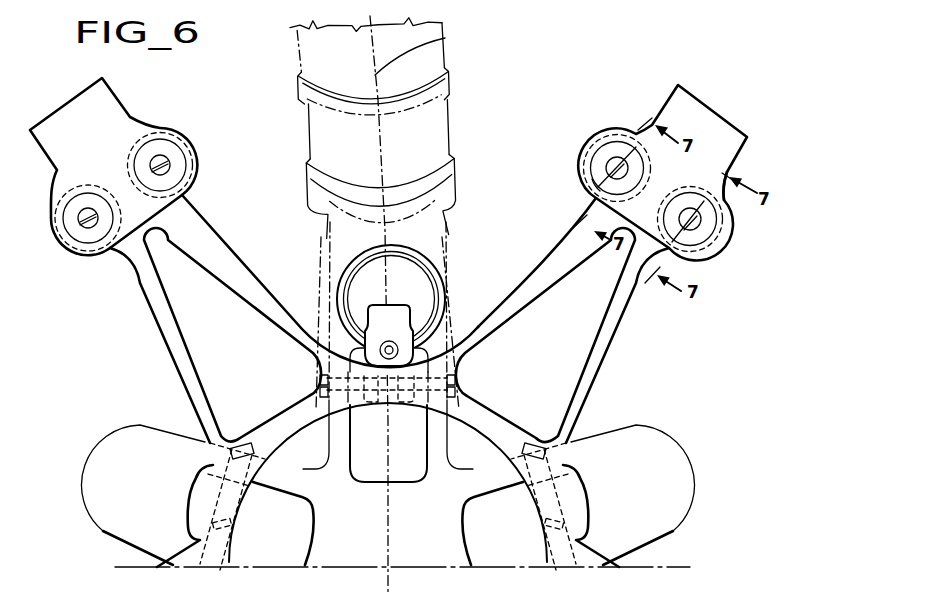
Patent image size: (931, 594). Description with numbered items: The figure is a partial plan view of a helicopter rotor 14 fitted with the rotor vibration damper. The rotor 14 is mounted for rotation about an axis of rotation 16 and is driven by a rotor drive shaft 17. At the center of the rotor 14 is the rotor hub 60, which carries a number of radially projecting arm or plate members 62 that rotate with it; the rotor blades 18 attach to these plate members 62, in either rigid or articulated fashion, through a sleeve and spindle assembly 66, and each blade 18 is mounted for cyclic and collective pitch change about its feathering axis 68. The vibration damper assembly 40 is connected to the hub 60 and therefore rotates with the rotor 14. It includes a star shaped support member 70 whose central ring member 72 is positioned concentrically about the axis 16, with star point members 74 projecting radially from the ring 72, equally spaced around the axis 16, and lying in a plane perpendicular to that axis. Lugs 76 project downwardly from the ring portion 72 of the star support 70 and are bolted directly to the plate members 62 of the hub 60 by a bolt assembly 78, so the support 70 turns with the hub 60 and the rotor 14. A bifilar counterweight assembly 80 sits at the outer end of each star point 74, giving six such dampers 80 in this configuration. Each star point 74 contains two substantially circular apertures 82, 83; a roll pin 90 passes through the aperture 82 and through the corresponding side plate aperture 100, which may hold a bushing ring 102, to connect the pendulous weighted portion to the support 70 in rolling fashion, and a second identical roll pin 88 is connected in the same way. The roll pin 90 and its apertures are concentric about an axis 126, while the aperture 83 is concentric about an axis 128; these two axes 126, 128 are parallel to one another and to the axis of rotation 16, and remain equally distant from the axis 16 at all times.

The helicopter rotor 14 is at (445, 319).
The axis of rotation 16 is at (390, 566).
The rotor drive shaft 17 is at (400, 478).
The rotor blades 18 is at (330, 47).
The vibration damper assembly 40 is at (394, 319).
The rotor hub 60 is at (452, 239).
The plate members 62 is at (445, 322).
The sleeve and spindle assembly 66 is at (323, 129).
The feathering axis 68 is at (445, 38).
The star shaped support member 70 is at (613, 353).
The central ring member 72 is at (482, 419).
The star point members 74 is at (538, 284).
The lugs 76 is at (373, 393).
The bolt assembly 78 is at (457, 381).
The bifilar counterweight assembly 80 is at (733, 135).
The aperture 82 is at (712, 252).
The aperture 83 is at (608, 183).
The roll pin 88 is at (601, 154).
The roll pin 90 is at (699, 230).
The aperture 100 is at (620, 134).
The bushing ring 102 is at (690, 186).
The axis 126 is at (696, 222).
The axis 128 is at (606, 167).